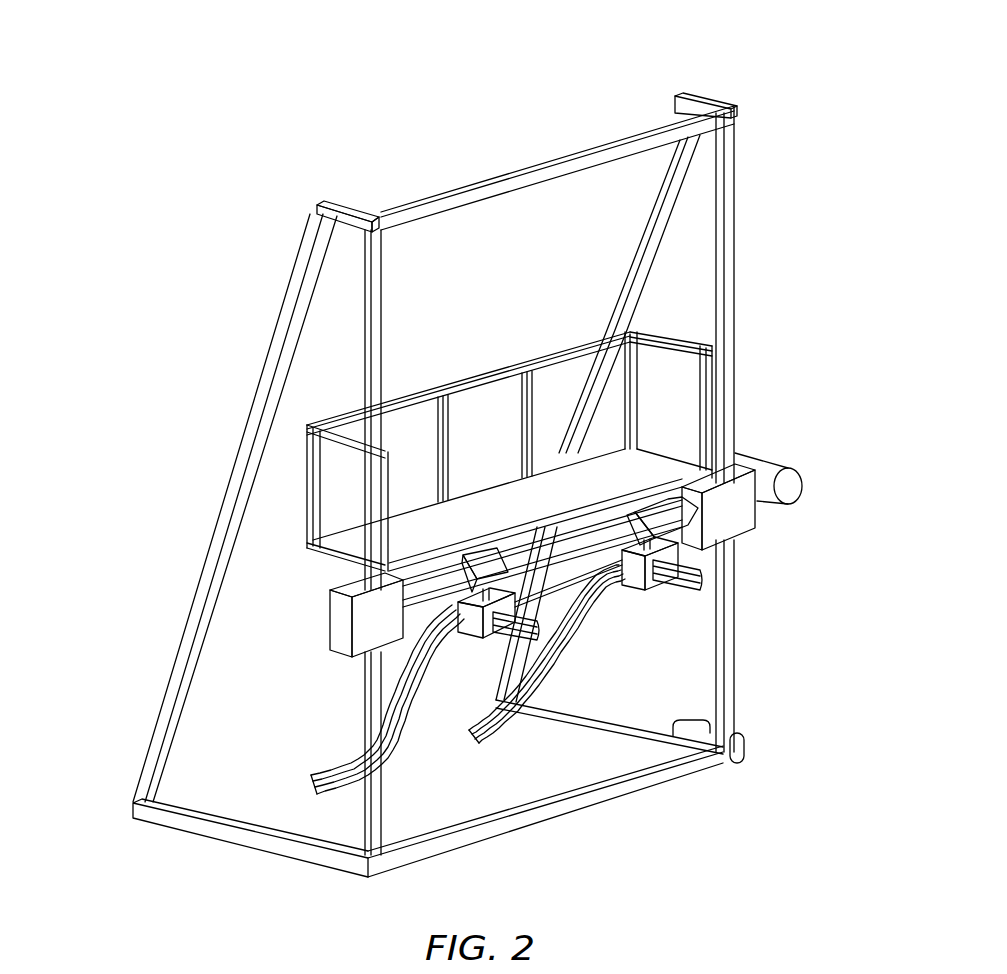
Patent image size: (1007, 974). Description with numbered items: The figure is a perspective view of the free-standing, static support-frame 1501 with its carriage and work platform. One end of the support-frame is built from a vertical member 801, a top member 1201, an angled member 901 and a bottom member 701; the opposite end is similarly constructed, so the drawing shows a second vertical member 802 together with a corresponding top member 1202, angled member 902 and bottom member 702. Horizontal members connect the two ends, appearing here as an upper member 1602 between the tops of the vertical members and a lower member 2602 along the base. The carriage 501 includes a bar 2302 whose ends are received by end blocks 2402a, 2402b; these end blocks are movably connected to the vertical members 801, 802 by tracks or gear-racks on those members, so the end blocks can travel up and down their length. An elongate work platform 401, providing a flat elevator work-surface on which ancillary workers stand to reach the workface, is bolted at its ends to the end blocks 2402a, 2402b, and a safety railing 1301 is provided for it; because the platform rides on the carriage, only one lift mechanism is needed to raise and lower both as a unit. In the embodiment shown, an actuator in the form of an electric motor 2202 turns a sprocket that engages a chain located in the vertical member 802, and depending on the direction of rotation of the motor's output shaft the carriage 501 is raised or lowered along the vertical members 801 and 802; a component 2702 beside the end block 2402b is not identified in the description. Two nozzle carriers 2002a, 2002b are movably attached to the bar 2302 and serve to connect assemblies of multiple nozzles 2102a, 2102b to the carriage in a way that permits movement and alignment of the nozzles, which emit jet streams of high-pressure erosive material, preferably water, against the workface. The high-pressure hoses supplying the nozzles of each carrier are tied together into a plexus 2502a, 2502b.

The support-frame 1501 is at (152, 629).
The vertical member 801 is at (364, 333).
The vertical member 802 is at (737, 300).
The angled member 901 is at (224, 521).
The right diagonal support 902 is at (636, 232).
The top member 1201 is at (343, 202).
The right upper corner block 1202 is at (700, 95).
The upper cross beam 1602 is at (553, 170).
The bottom member 701 is at (268, 851).
The rear base rail 702 is at (655, 731).
The front base rail 2602 is at (555, 813).
The electric motor 2202 is at (745, 741).
The work platform 401 is at (485, 469).
The safety railing 1301 is at (452, 376).
The carriage 501 is at (314, 612).
The bar 2302 is at (427, 582).
The end block 2402a is at (326, 632).
The end block 2402b is at (756, 518).
The drum 2702 is at (805, 481).
The nozzle carrier 2002a is at (470, 651).
The nozzle carrier 2002b is at (648, 597).
The nozzle assembly 2102a is at (540, 631).
The nozzle assembly 2102b is at (701, 580).
The plexus 2502a is at (322, 774).
The plexus 2502b is at (492, 749).